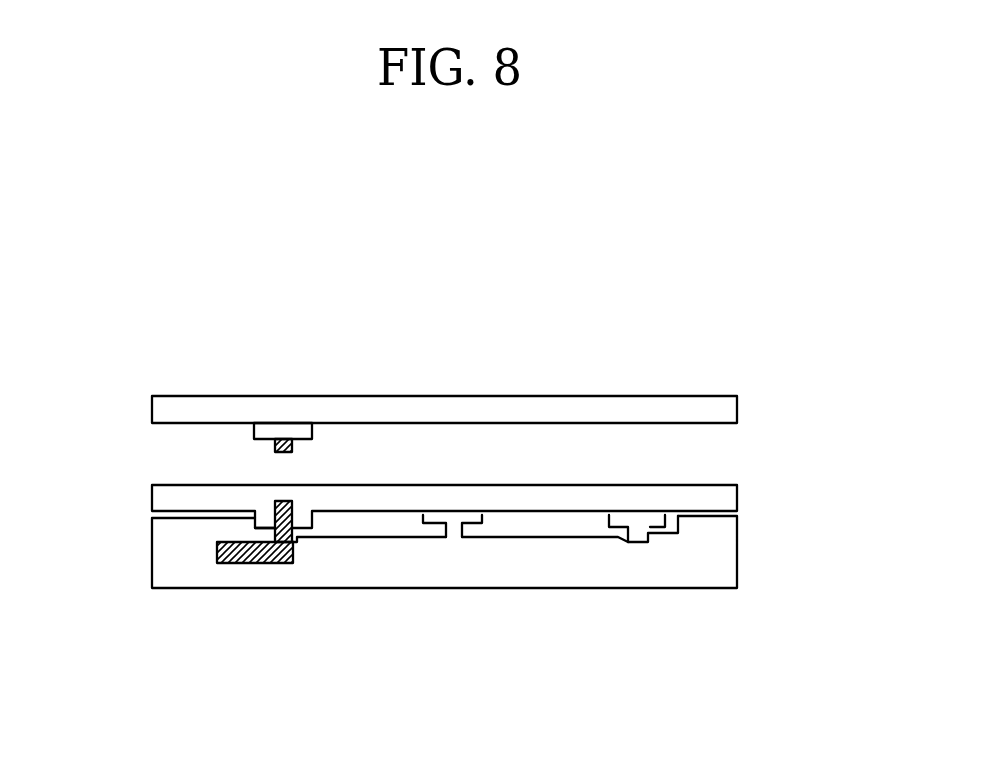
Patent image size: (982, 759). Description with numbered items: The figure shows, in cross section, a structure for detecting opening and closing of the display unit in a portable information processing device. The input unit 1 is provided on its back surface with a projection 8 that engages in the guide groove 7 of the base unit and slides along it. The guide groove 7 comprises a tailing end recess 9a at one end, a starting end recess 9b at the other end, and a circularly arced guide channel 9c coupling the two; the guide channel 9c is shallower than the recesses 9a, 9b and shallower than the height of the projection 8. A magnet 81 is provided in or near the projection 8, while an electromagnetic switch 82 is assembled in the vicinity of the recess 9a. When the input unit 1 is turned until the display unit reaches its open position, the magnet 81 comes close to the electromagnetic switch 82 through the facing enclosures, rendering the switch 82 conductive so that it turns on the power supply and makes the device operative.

The input unit 1 is at (653, 402).
The guide groove 7 is at (690, 521).
The projection 8 is at (287, 432).
The magnet 81 is at (292, 500).
The electromagnetic switch 82 is at (217, 545).
The tailing end recess 9a is at (305, 547).
The starting end recess 9b is at (660, 545).
The guide channel 9c is at (497, 540).